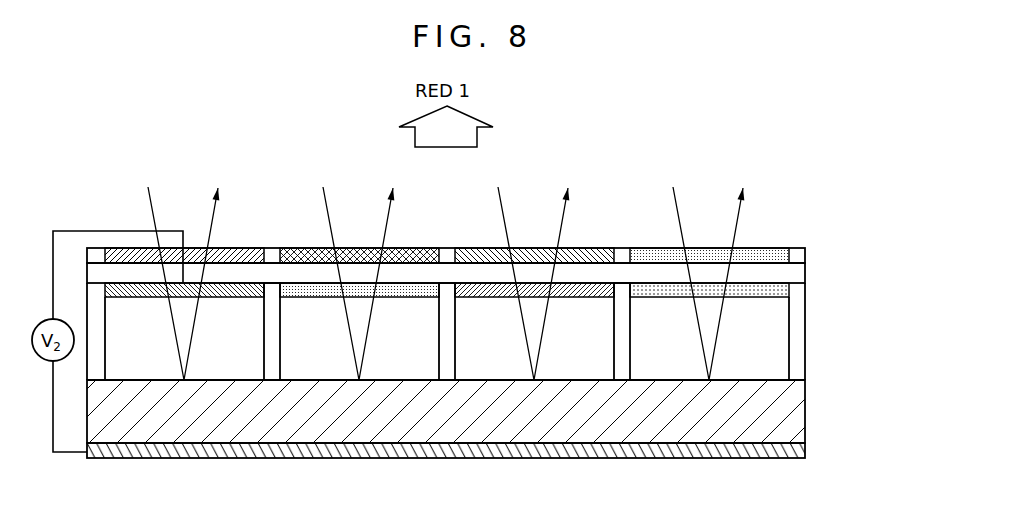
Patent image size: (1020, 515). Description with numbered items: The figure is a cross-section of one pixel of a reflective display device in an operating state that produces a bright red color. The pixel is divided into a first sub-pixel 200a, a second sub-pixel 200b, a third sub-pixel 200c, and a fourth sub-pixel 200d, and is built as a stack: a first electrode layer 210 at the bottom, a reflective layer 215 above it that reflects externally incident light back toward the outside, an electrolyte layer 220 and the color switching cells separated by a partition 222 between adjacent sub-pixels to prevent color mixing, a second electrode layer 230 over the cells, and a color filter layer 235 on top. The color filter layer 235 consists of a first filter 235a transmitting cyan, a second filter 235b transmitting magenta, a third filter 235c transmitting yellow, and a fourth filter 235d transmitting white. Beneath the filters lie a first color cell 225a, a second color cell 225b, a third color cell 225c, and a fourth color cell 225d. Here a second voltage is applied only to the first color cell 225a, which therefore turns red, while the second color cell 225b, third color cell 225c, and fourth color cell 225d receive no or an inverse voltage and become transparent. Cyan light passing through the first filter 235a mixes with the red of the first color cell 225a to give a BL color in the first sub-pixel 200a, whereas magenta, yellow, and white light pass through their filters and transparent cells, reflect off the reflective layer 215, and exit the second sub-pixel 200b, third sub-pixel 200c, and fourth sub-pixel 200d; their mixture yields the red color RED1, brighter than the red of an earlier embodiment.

The color filter layer 235 is at (812, 257).
The first filter 235a is at (133, 252).
The second filter 235b is at (337, 250).
The third filter 235c is at (512, 253).
The fourth filter 235d is at (687, 253).
The second electrode layer 230 is at (805, 273).
The partition 222 is at (805, 311).
The first color cell 225a is at (243, 290).
The second color cell 225b is at (419, 290).
The third color cell 225c is at (593, 290).
The fourth color cell 225d is at (768, 290).
The electrolyte layer 220 is at (788, 348).
The reflective layer 215 is at (805, 413).
The first electrode layer 210 is at (805, 450).
The first sub-pixel 200a is at (264, 463).
The second sub-pixel 200b is at (439, 463).
The third sub-pixel 200c is at (614, 463).
The fourth sub-pixel 200d is at (789, 463).